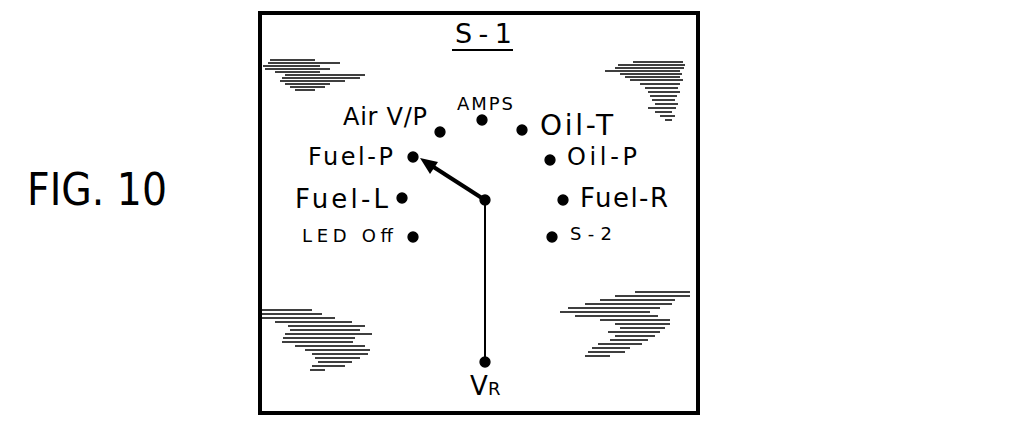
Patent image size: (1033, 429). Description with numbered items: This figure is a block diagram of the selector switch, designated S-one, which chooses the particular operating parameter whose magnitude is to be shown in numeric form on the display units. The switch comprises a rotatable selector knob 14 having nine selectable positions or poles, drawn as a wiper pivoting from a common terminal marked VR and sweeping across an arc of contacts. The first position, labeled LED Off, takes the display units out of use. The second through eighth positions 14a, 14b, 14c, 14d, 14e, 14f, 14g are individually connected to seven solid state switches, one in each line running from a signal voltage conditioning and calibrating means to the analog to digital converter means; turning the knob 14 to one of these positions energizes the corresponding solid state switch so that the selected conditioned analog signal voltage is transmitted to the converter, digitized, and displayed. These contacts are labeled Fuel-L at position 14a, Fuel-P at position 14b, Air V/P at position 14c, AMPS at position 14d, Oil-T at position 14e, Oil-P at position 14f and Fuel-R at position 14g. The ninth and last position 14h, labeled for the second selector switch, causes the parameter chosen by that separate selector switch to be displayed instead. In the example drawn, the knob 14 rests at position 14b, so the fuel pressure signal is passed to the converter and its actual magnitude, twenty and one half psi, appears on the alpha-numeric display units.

The rotatable selector knob 14 is at (455, 182).
The second selectable position 14a is at (407, 196).
The third selectable position 14b is at (418, 155).
The fourth selectable position 14c is at (442, 127).
The fifth selectable position 14d is at (487, 121).
The sixth selectable position 14e is at (526, 128).
The seventh selectable position 14f is at (546, 162).
The eighth selectable position 14g is at (559, 202).
The ninth selectable position 14h is at (548, 240).